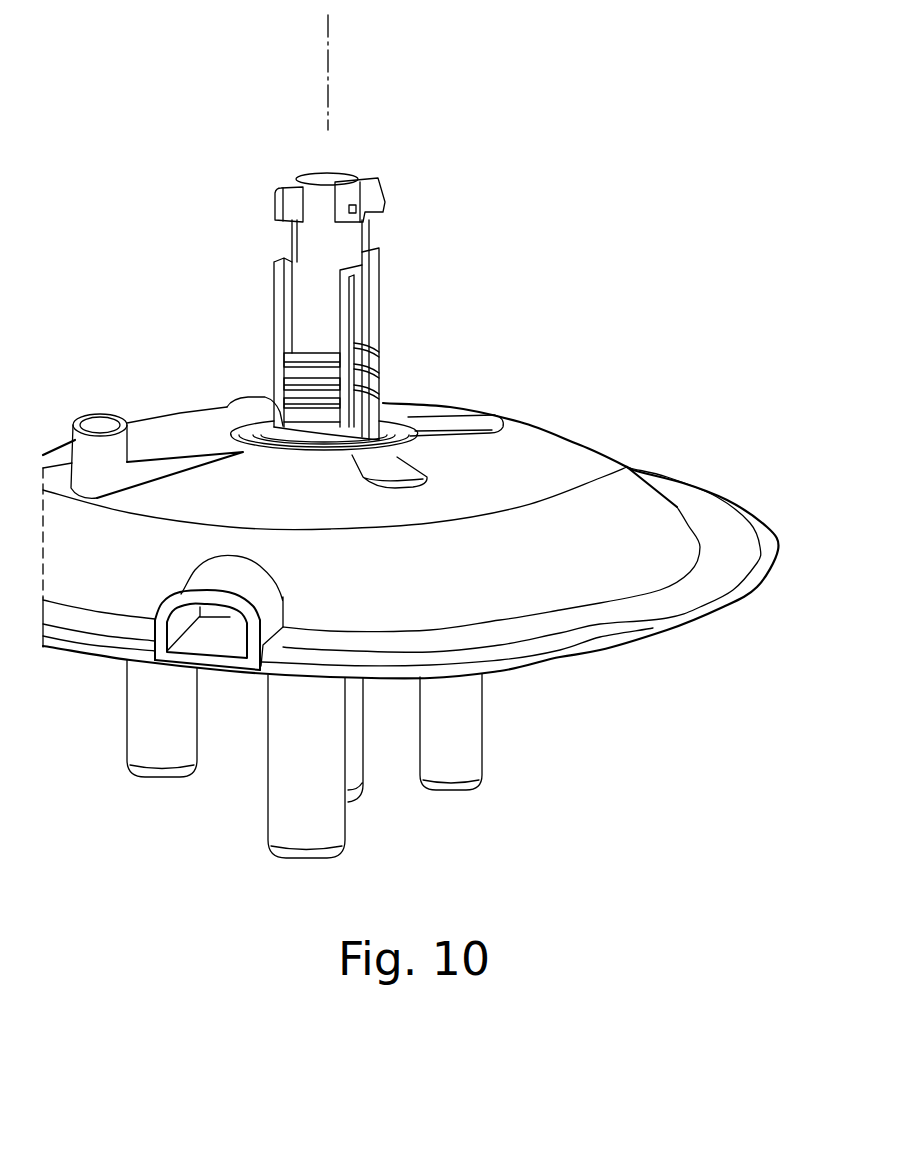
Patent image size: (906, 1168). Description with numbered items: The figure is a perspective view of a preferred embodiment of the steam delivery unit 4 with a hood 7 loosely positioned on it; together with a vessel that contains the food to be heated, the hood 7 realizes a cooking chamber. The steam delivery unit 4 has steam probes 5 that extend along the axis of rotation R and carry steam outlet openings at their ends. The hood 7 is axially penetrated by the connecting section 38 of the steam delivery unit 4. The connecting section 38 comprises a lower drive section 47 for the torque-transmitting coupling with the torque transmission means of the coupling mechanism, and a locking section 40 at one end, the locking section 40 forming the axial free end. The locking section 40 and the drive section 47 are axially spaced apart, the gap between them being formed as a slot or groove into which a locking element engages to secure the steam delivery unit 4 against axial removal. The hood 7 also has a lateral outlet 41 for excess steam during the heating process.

The axis of rotation R is at (328, 68).
The steam delivery unit 4 is at (518, 705).
The steam probes 5 is at (318, 827).
The hood 7 is at (548, 448).
The connecting section 38 is at (358, 368).
The locking section 40 is at (373, 197).
The lateral outlet 41 is at (210, 627).
The drive section 47 is at (312, 323).